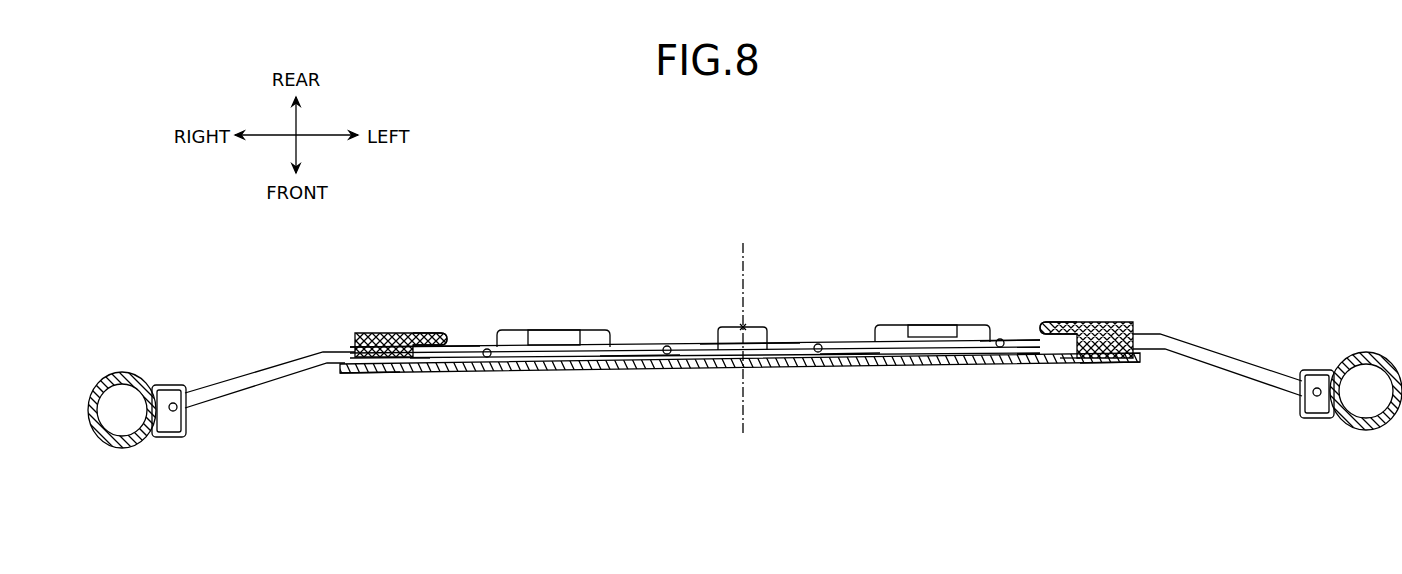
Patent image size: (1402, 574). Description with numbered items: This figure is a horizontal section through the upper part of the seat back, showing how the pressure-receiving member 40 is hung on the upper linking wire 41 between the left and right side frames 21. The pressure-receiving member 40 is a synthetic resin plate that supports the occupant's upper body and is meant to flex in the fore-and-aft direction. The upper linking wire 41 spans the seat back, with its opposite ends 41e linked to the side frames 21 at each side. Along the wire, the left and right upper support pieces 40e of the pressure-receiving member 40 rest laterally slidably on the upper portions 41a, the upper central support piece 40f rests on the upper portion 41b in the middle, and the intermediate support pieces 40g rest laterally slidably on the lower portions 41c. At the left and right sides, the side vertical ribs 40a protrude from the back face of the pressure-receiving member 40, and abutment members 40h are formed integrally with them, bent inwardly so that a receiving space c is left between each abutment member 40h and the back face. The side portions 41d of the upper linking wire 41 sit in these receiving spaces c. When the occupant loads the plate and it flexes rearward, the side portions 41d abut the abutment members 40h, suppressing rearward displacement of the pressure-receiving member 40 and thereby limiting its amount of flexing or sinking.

The side frame 21 is at (120, 372).
The pressure-receiving member 40 is at (780, 372).
The side vertical rib 40a is at (392, 372).
The upper support piece 40e is at (355, 333).
The upper central support piece 40f is at (735, 327).
The intermediate support piece 40g is at (540, 330).
The abutment member 40h is at (430, 333).
The upper linking wire 41 is at (655, 345).
The upper portion 41a is at (462, 345).
The upper portion 41b is at (787, 345).
The lower portion 41c is at (630, 370).
The side portion 41d is at (490, 371).
The end 41e is at (176, 437).
The receiving space c is at (418, 372).